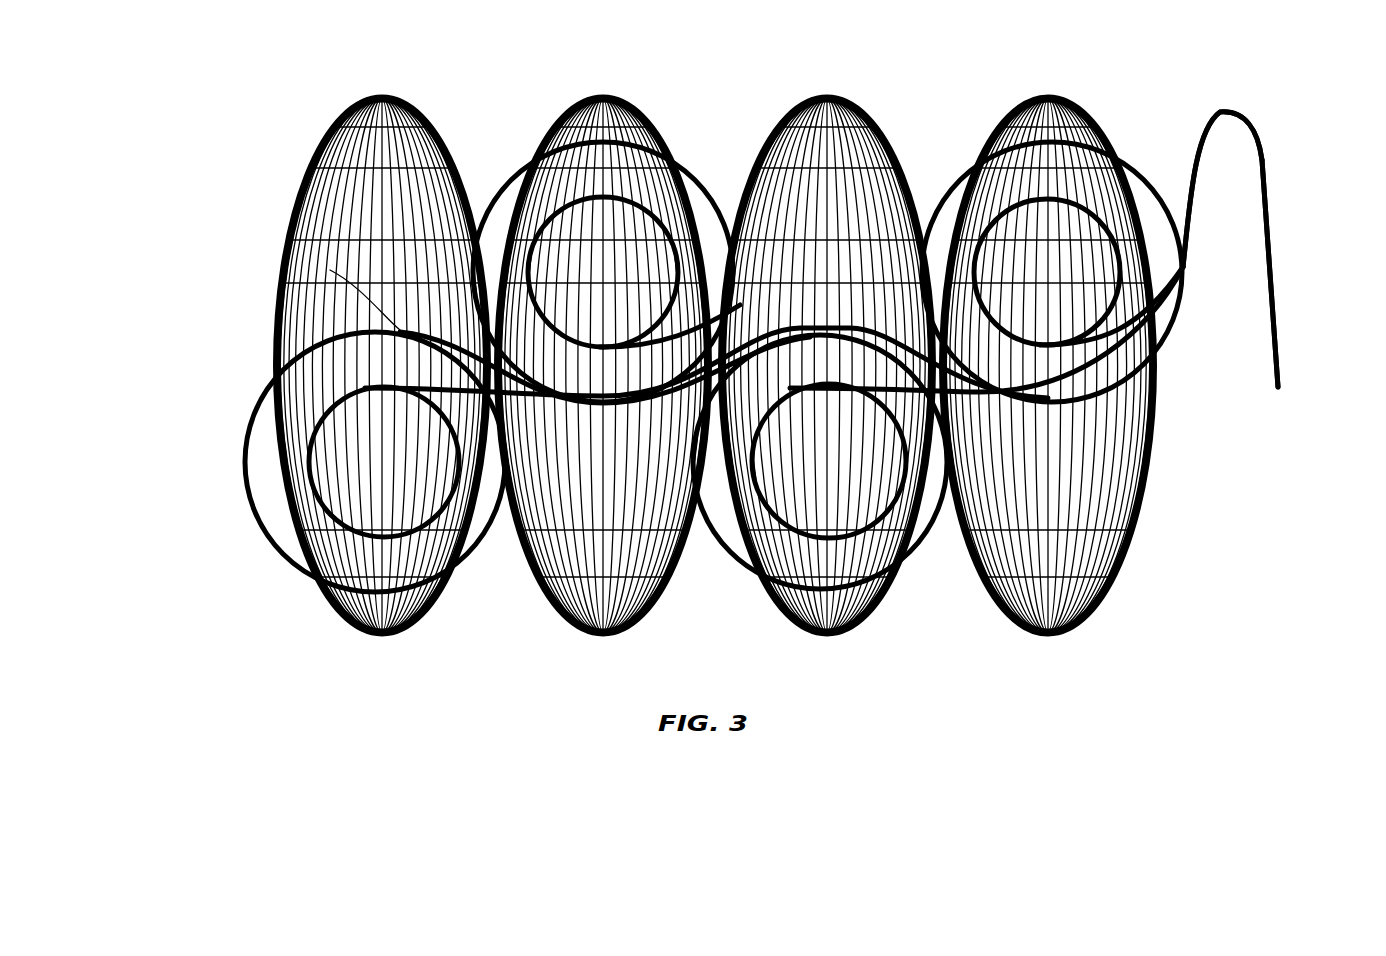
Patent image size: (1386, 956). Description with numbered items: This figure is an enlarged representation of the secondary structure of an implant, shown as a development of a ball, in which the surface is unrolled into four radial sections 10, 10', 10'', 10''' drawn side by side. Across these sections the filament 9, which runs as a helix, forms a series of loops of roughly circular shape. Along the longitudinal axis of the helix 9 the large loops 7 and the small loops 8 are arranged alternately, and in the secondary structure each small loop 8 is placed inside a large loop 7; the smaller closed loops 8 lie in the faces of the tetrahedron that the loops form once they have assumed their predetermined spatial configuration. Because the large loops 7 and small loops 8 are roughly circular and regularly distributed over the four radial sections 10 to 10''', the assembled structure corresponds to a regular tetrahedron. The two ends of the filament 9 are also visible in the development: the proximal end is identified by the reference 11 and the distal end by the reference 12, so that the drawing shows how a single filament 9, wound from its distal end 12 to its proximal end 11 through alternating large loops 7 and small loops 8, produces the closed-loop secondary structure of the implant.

The radial section 10 is at (382, 331).
The radial section 10' is at (603, 331).
The radial section 10'' is at (827, 331).
The radial section 10''' is at (1048, 331).
The large loop 7 is at (662, 158).
The small closed loop 8 is at (660, 218).
The filament 9 is at (1262, 176).
The proximal end of filament 11 is at (1290, 381).
The distal end of filament 12 is at (330, 270).